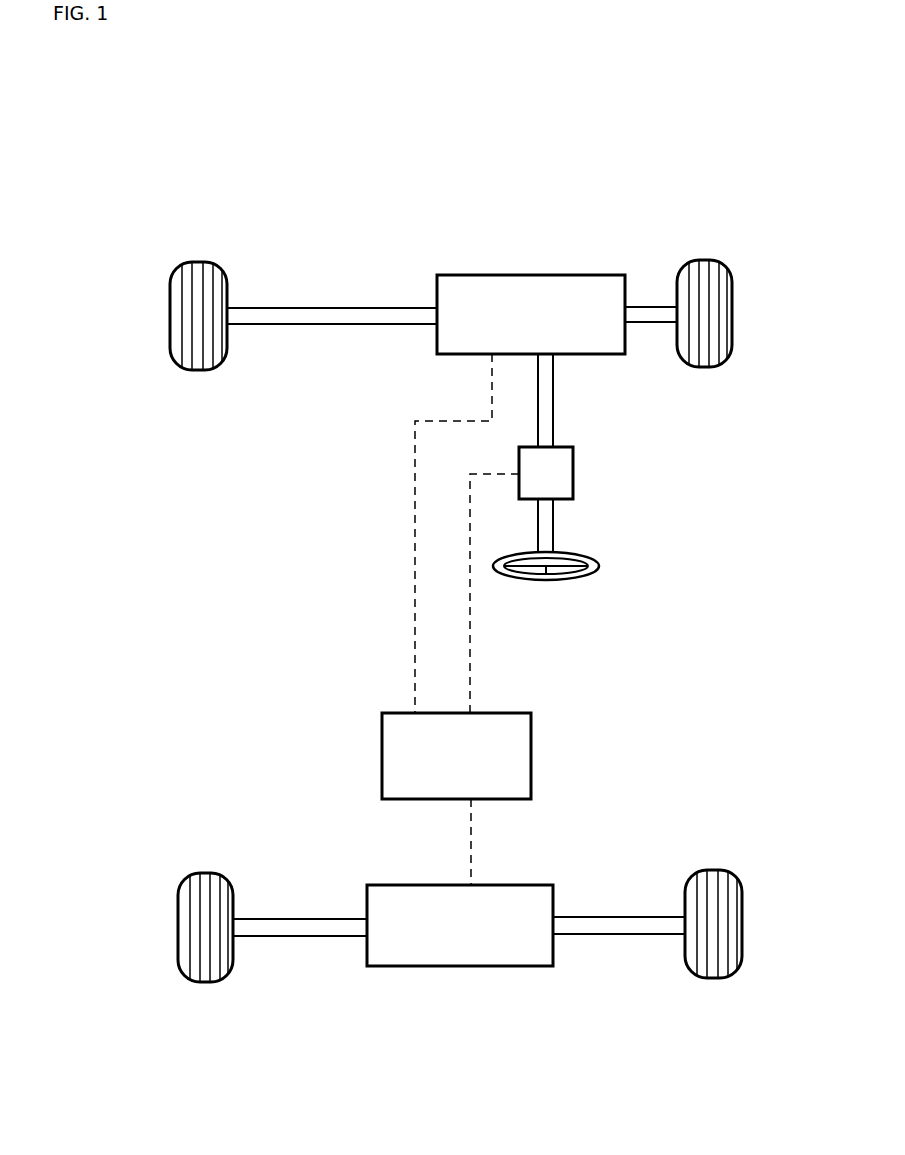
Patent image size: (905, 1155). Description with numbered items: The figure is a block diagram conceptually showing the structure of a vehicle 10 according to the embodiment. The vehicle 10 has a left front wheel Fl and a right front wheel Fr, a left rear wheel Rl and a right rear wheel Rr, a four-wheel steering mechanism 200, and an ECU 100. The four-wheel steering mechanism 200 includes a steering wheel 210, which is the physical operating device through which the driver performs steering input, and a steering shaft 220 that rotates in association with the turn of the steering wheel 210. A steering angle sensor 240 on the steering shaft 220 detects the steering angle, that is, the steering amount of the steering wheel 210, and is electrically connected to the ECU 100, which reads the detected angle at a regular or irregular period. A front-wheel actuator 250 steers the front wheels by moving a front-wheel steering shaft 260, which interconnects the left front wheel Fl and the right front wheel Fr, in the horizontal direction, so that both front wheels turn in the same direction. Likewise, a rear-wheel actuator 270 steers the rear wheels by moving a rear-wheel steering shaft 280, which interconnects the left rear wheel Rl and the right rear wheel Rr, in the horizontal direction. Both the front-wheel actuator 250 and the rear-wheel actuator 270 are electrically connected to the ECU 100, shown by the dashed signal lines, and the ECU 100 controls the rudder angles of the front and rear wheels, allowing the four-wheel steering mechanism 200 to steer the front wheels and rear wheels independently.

The vehicle 10 is at (157, 134).
The four-wheel steering mechanism 200 is at (619, 188).
The front-wheel actuator 250 is at (545, 275).
The front-wheel steering shaft 260 is at (385, 308).
The steering shaft 220 is at (553, 426).
The steering angle sensor 240 is at (573, 472).
The steering wheel 210 is at (600, 566).
The ECU 100 is at (382, 757).
The rear-wheel actuator 270 is at (460, 967).
The rear-wheel steering shaft 280 is at (590, 936).
The left front wheel Fl is at (172, 282).
The right front wheel Fr is at (733, 278).
The left rear wheel Rl is at (182, 888).
The right rear wheel Rr is at (737, 882).